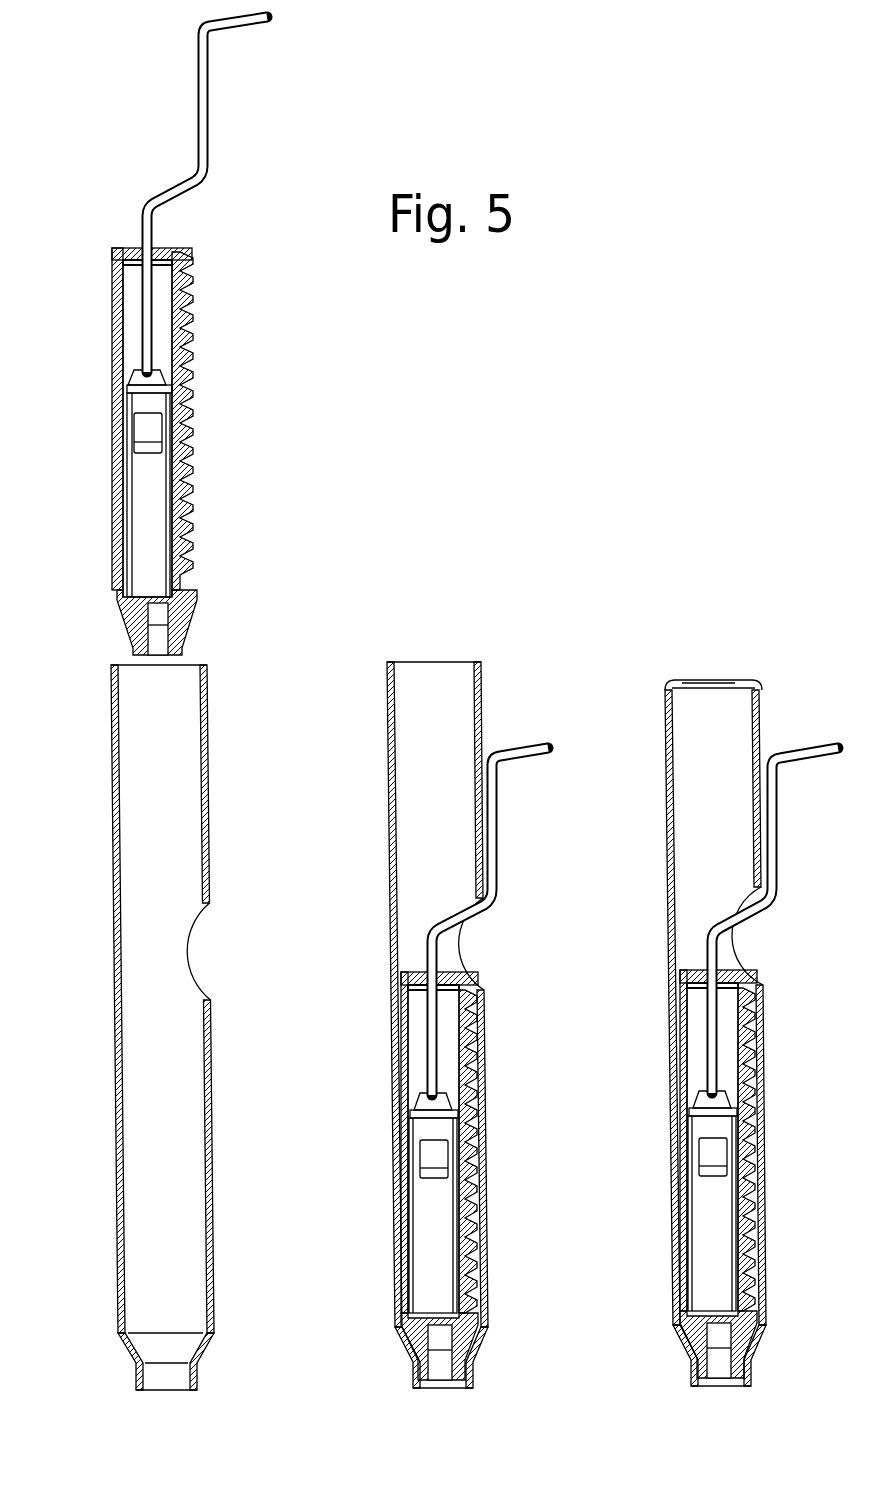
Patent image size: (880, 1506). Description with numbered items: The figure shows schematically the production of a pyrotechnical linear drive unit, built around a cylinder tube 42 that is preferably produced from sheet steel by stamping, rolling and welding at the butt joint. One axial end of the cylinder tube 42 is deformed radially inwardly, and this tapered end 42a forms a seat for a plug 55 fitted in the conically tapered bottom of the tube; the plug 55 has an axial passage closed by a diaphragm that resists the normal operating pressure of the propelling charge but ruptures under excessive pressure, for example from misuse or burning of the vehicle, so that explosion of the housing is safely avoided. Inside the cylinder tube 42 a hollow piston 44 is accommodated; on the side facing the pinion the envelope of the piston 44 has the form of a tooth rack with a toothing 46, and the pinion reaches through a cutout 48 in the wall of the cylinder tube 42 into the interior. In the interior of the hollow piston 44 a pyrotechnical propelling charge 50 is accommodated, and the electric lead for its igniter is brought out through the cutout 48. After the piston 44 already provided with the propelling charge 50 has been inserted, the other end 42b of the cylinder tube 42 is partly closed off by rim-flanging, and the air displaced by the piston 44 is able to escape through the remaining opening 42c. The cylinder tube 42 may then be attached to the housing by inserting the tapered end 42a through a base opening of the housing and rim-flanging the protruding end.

The cylinder tube 42 is at (155, 1029).
The tapered end 42a is at (137, 1380).
The other end of the cylinder tube 42b is at (695, 1002).
The remaining opening 42c is at (721, 677).
The hollow piston 44 is at (116, 343).
The toothing 46 is at (190, 383).
The cutout 48 is at (185, 947).
The pyrotechnical propelling charge 50 is at (427, 1222).
The plug 55 is at (196, 598).